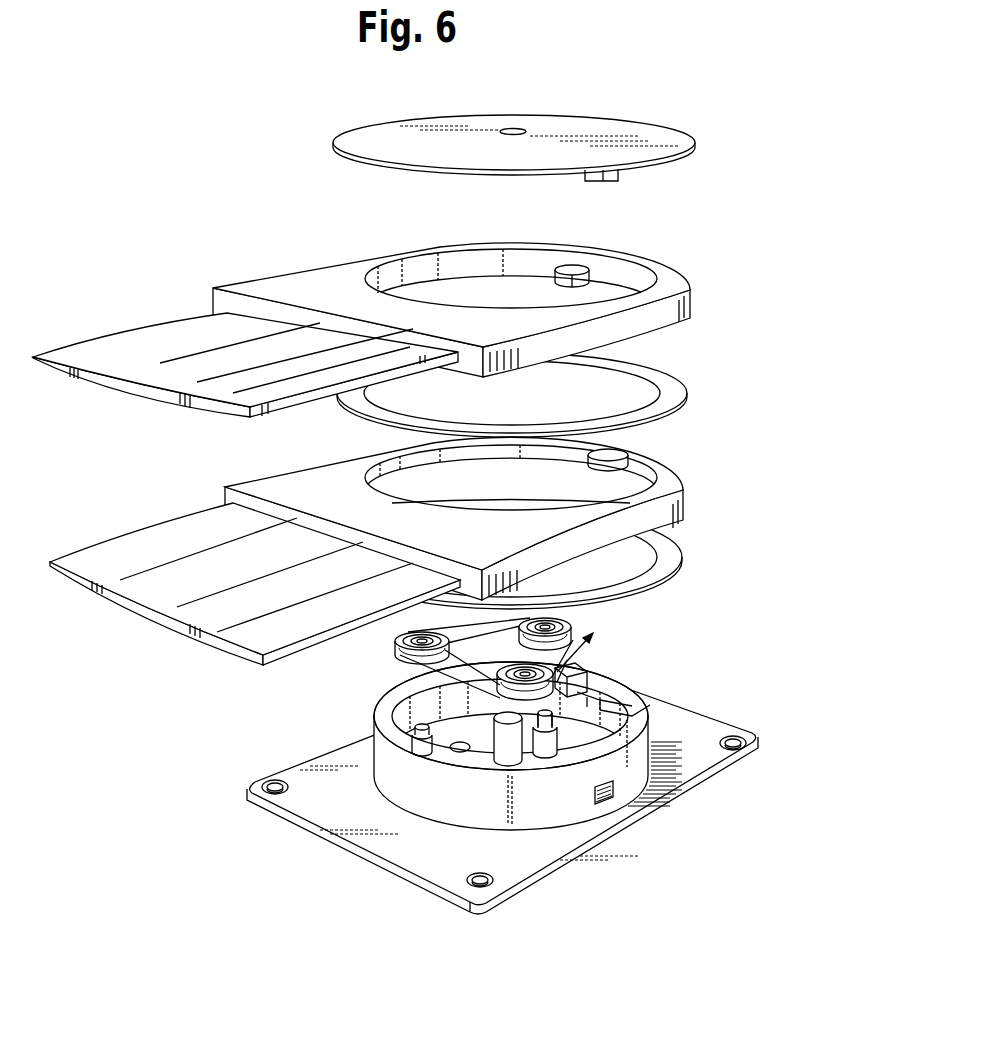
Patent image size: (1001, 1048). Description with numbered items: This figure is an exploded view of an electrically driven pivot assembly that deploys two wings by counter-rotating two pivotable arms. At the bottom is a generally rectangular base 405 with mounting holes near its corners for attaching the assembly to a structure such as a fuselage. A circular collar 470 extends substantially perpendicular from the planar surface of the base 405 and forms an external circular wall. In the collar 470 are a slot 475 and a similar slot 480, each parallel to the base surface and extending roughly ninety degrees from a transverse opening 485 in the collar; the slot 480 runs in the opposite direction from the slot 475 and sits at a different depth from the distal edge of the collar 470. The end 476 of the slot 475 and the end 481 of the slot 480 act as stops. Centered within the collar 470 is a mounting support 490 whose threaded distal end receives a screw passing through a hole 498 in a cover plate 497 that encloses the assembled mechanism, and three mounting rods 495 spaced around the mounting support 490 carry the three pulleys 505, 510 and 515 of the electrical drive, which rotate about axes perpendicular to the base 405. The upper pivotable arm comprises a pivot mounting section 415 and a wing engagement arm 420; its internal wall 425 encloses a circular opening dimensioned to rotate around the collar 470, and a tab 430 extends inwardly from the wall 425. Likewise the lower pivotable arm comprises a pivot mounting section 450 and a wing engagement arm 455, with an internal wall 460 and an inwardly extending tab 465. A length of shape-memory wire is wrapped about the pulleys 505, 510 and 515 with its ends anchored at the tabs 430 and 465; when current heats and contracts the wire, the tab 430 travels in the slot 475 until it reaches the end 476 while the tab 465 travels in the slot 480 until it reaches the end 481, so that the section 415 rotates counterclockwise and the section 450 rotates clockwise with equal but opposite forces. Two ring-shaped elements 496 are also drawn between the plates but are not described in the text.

The base 405 is at (700, 725).
The pivot mounting section 415 is at (451, 283).
The wing engagement arm 420 is at (183, 347).
The internal wall 425 is at (413, 255).
The tab 430 is at (575, 266).
The pivot mounting section 450 is at (474, 503).
The wing engagement arm 455 is at (176, 543).
The internal wall 460 is at (662, 493).
The tab 465 is at (612, 452).
The circular collar 470 is at (511, 774).
The slot 475 is at (427, 681).
The end of slot 476 is at (392, 716).
The slot 480 is at (645, 772).
The end of slot 481 is at (610, 797).
The transverse opening 485 is at (593, 690).
The mounting support 490 is at (460, 752).
The mounting rods 495 is at (548, 745).
The seal ring 496 is at (677, 388).
The cover plate 497 is at (682, 130).
The hole 498 is at (518, 128).
The pulley 505 is at (397, 634).
The pulley 510 is at (552, 696).
The pulley 515 is at (572, 624).